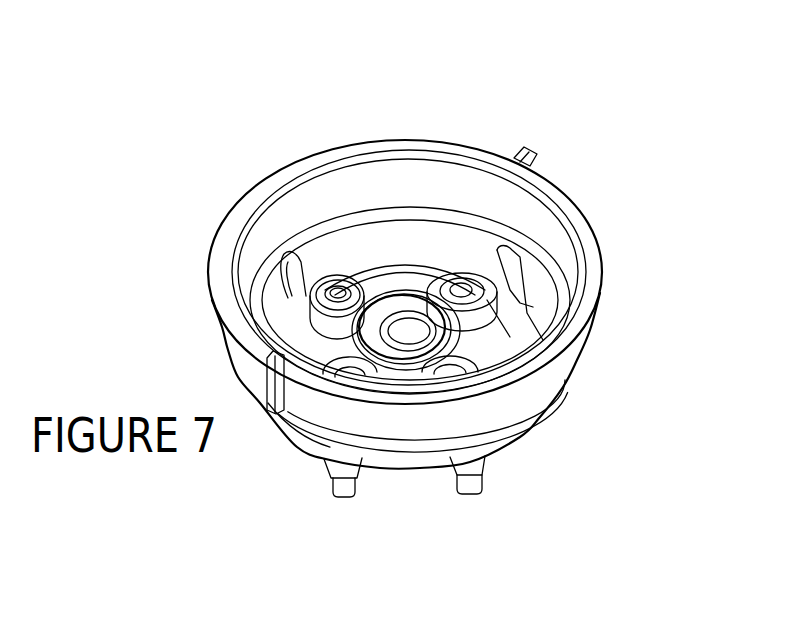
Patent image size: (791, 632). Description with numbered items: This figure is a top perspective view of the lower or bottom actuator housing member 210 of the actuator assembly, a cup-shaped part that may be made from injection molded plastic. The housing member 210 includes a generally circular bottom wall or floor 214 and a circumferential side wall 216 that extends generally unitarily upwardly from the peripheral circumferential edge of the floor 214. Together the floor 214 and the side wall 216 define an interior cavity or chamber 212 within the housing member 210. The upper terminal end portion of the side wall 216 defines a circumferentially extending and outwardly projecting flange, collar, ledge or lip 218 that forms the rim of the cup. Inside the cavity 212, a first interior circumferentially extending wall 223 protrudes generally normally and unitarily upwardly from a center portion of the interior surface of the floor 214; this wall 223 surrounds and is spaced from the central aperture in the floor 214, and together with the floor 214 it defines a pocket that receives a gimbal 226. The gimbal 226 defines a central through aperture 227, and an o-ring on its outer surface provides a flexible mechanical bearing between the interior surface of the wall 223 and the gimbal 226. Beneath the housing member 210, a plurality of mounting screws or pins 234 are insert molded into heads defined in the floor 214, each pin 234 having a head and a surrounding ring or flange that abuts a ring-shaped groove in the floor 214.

The housing member 210 is at (459, 80).
The interior cavity 212 is at (338, 212).
The floor 214 is at (413, 472).
The side wall 216 is at (558, 375).
The flange 218 is at (565, 196).
The first interior circumferentially extending wall 223 is at (470, 355).
The gimbal 226 is at (407, 290).
The central through aperture 227 is at (390, 330).
The mounting pins 234 is at (330, 475).